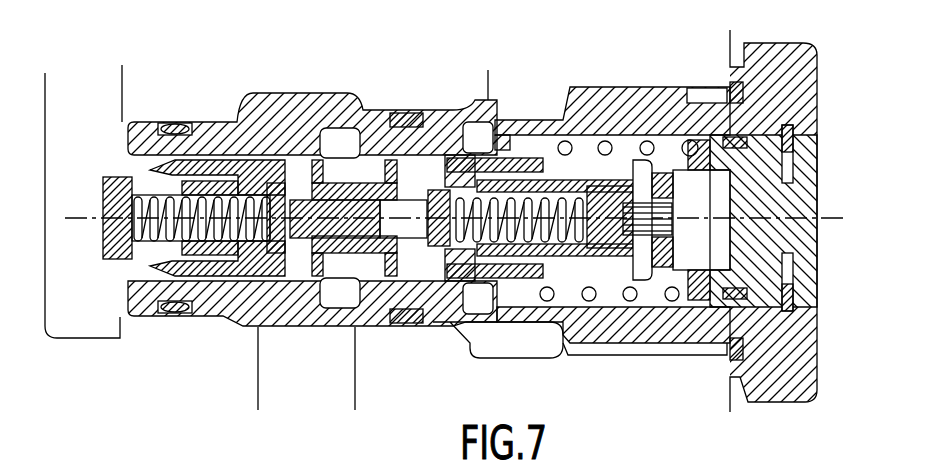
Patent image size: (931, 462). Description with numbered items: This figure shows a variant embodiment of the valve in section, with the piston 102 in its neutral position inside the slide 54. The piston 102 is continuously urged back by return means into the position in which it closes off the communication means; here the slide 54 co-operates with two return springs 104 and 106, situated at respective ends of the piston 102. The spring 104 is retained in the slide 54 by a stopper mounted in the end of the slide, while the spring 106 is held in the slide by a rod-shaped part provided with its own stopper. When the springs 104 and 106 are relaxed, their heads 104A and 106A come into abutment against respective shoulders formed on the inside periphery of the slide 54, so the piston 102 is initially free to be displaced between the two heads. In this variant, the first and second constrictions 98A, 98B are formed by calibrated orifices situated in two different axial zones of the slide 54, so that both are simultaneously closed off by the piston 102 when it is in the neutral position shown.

The slide 54 is at (237, 167).
The first constriction 98A is at (336, 185).
The second constriction 98B is at (379, 185).
The piston 102 is at (350, 220).
The return spring 104 is at (165, 177).
The head of the spring 104A is at (285, 177).
The return spring 106 is at (548, 175).
The head of the spring 106A is at (443, 187).